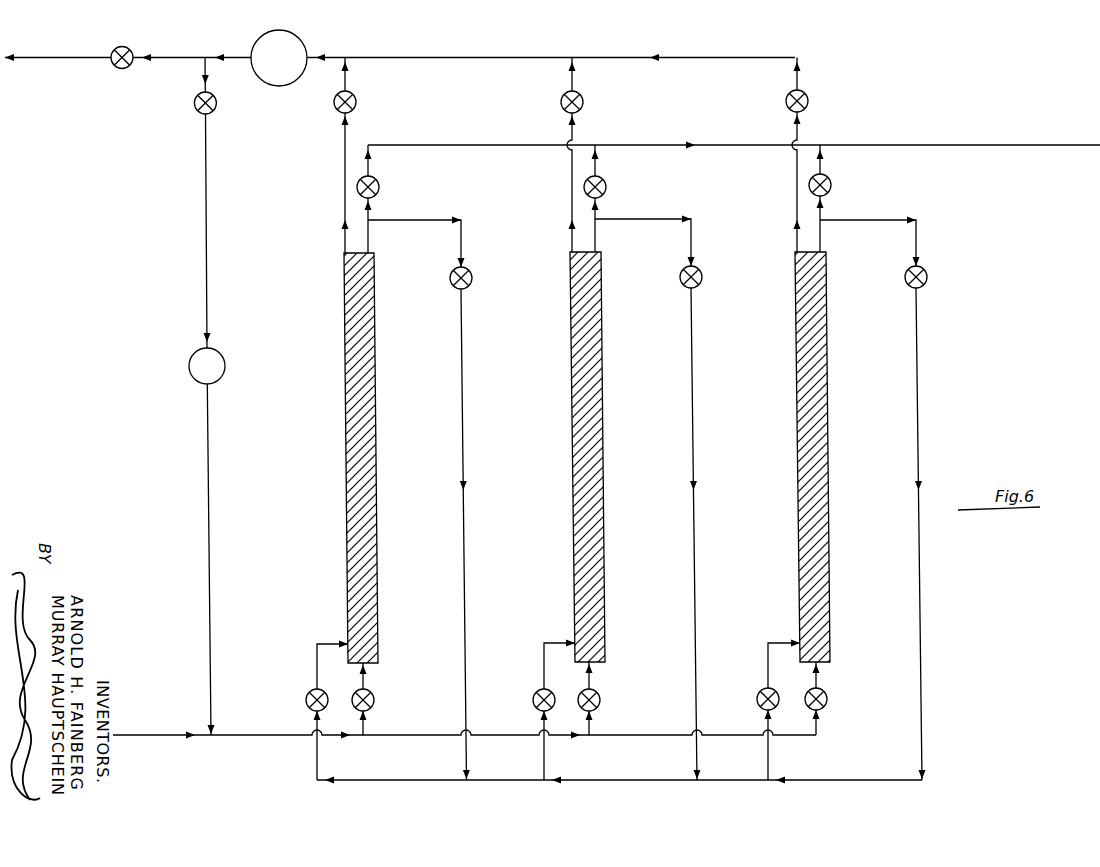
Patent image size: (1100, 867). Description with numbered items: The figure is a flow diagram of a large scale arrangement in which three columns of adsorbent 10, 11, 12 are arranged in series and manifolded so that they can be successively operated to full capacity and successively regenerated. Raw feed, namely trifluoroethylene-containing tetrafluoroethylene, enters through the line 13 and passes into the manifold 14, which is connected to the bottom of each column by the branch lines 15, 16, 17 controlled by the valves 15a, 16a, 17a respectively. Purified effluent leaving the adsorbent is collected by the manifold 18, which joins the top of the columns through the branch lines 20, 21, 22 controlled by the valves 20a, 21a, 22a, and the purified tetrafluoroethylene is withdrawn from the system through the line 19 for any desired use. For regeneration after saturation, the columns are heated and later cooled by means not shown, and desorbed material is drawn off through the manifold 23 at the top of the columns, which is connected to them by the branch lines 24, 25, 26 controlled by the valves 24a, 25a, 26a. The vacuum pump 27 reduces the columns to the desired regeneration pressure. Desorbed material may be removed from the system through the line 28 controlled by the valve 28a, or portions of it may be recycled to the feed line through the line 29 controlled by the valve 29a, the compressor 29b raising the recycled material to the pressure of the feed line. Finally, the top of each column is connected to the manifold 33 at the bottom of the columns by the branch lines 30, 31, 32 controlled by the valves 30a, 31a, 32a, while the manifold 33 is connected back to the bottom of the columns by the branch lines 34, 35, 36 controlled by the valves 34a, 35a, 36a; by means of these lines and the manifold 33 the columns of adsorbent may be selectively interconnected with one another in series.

The column of adsorbent 10 is at (360, 361).
The column of adsorbent 11 is at (586, 361).
The column of adsorbent 12 is at (811, 361).
The line 13 is at (162, 734).
The manifold 14 is at (408, 737).
The branch line 15 is at (367, 728).
The valve 15a is at (373, 697).
The branch line 16 is at (592, 727).
The valve 16a is at (600, 697).
The branch line 17 is at (818, 730).
The valve 17a is at (827, 695).
The manifold 18 is at (717, 143).
The line 19 is at (1072, 147).
The branch line 20 is at (370, 238).
The valve 20a is at (380, 187).
The branch line 21 is at (597, 238).
The valve 21a is at (607, 187).
The branch line 22 is at (822, 238).
The valve 22a is at (832, 185).
The manifold 23 is at (532, 35).
The branch line 24 is at (345, 177).
The valve 24a is at (356, 100).
The branch line 25 is at (572, 178).
The valve 25a is at (583, 100).
The branch line 26 is at (797, 180).
The valve 26a is at (808, 99).
The vacuum pump 27 is at (287, 52).
The line 28 is at (62, 62).
The valve 28a is at (122, 69).
The line 29 is at (206, 222).
The valve 29a is at (194, 108).
The compressor 29b is at (210, 363).
The branch line 30 is at (462, 385).
The valve 30a is at (473, 273).
The branch line 31 is at (693, 385).
The valve 31a is at (702, 272).
The branch line 32 is at (919, 385).
The valve 32a is at (928, 272).
The manifold 33 is at (493, 783).
The branch line 34 is at (317, 765).
The valve 34a is at (306, 699).
The branch line 35 is at (544, 765).
The valve 35a is at (533, 699).
The branch line 36 is at (768, 763).
The valve 36a is at (762, 699).